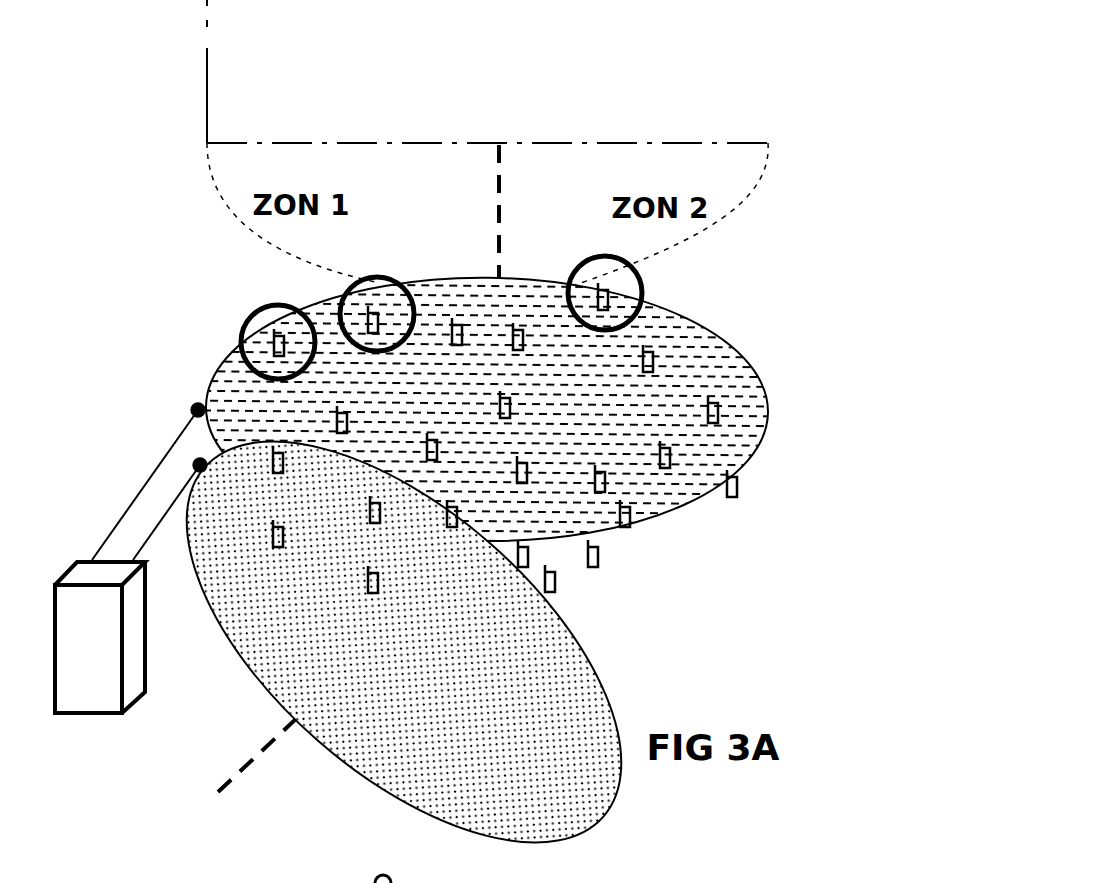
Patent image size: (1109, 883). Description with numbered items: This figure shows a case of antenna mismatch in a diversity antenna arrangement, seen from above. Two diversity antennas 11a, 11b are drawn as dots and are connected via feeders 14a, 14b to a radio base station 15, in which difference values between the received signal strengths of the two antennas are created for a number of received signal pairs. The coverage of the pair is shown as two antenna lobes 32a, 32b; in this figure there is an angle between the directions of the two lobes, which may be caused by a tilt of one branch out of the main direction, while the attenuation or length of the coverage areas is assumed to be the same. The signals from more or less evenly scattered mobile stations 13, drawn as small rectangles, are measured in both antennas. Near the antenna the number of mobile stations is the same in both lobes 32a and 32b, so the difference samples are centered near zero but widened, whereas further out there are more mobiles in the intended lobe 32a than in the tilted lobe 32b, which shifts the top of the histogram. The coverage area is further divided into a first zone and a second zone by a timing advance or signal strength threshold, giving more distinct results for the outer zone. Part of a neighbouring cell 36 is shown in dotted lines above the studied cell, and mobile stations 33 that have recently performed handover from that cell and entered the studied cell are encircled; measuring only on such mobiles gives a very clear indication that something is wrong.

The diversity antenna 11a is at (198, 410).
The diversity antenna 11b is at (200, 465).
The mobile station 13 is at (540, 588).
The feeder 14a is at (125, 513).
The feeder 14b is at (142, 548).
The radio base station 15 is at (100, 637).
The antenna lobe 32a is at (685, 330).
The antenna lobe 32b is at (608, 687).
The mobile station which has performed handover 33 is at (277, 329).
The neighbouring cell 36 is at (487, 85).